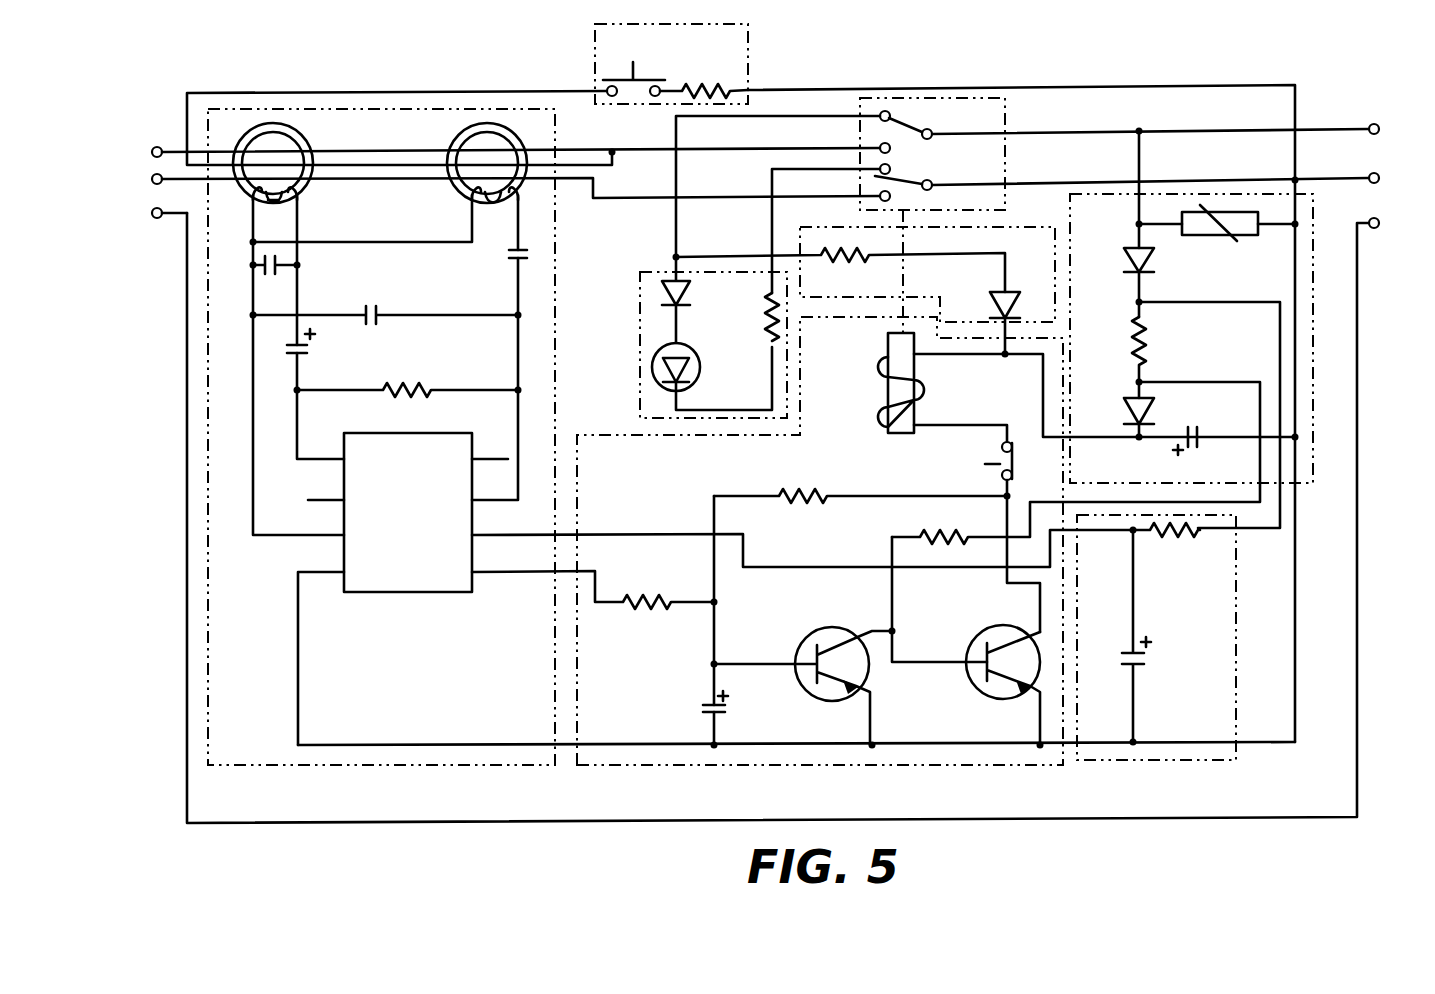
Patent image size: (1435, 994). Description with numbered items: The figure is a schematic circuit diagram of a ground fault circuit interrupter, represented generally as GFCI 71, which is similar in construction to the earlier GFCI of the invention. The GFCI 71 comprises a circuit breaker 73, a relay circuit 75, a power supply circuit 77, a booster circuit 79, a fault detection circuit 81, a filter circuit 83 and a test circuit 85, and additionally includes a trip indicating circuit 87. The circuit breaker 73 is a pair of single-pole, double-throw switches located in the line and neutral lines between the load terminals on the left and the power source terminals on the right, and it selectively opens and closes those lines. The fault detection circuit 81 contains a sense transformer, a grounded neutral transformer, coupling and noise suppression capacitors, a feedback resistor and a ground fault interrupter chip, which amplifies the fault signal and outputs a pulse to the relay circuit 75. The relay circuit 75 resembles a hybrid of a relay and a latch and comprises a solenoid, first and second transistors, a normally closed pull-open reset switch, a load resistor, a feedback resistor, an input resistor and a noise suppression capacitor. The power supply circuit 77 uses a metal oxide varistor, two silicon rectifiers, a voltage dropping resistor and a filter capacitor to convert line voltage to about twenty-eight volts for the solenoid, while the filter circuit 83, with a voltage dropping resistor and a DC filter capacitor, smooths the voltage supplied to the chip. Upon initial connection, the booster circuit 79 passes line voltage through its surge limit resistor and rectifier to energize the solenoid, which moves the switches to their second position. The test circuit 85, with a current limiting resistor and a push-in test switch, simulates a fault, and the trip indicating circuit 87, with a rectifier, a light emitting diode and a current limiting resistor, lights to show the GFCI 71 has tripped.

The ground fault circuit interrupter 71 is at (306, 836).
The circuit breaker 73 is at (1005, 100).
The relay circuit 75 is at (620, 765).
The power supply circuit 77 is at (1305, 498).
The booster circuit 79 is at (800, 243).
The fault detection circuit 81 is at (445, 765).
The filter circuit 83 is at (1190, 760).
The test circuit 85 is at (748, 52).
The trip indicating circuit 87 is at (640, 325).